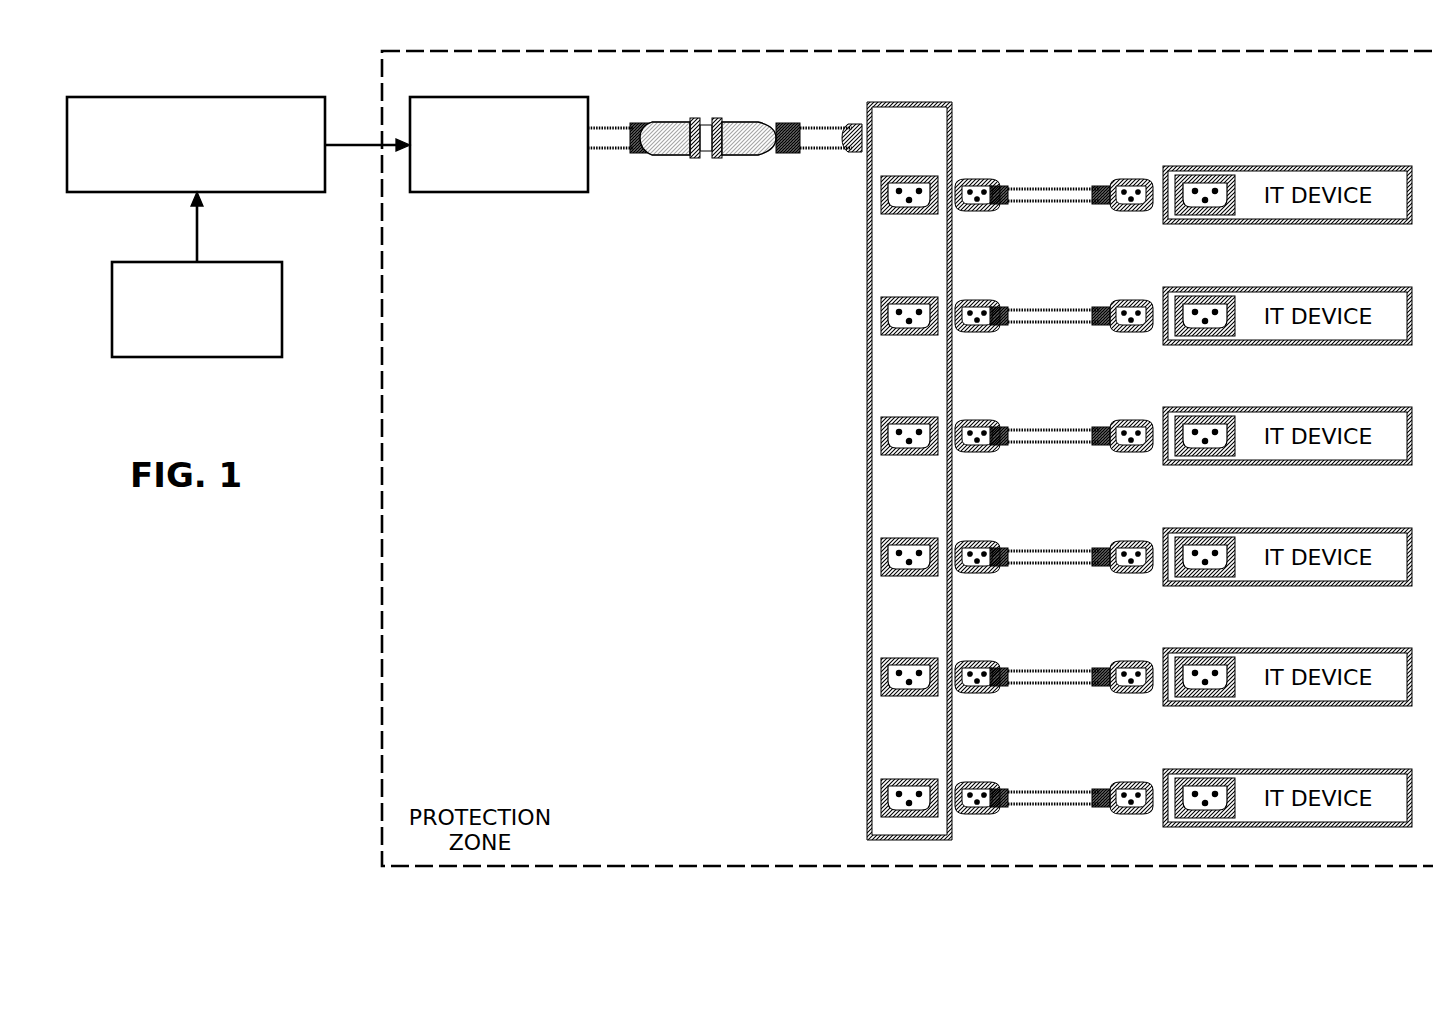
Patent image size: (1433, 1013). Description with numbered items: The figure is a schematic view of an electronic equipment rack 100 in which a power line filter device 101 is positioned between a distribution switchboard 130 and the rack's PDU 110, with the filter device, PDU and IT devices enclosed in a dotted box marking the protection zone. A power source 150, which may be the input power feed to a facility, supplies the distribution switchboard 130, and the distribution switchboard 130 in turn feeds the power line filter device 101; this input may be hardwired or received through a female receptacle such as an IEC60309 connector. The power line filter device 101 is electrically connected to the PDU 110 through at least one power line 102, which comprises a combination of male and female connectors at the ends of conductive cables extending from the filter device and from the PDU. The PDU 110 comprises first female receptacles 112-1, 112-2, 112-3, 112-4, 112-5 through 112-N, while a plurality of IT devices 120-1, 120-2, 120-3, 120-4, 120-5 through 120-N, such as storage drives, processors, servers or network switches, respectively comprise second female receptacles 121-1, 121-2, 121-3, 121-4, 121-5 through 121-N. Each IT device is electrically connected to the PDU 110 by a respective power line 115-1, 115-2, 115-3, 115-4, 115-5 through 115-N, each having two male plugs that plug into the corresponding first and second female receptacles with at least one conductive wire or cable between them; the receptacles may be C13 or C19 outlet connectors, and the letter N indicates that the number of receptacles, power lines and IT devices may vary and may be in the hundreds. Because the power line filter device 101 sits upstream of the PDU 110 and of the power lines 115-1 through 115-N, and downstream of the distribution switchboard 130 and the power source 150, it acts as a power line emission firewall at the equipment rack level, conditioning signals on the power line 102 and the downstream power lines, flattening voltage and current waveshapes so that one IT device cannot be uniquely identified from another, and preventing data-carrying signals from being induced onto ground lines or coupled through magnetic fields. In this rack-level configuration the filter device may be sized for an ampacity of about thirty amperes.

The electronic equipment rack 100 is at (1427, 82).
The power line filter device 101 is at (453, 192).
The power line 102 is at (810, 113).
The PDU 110 is at (952, 115).
The first female receptacle 112-1 is at (880, 197).
The first female receptacle 112-2 is at (880, 318).
The first female receptacle 112-3 is at (880, 438).
The first female receptacle 112-4 is at (880, 559).
The first female receptacle 112-5 is at (880, 679).
The first female receptacle 112-N is at (880, 800).
The power line 115-1 is at (1054, 169).
The power line 115-2 is at (1054, 290).
The power line 115-3 is at (1054, 410).
The power line 115-4 is at (1054, 531).
The power line 115-5 is at (1054, 651).
The power line 115-N is at (1054, 772).
The IT device 120-1 is at (1375, 167).
The IT device 120-2 is at (1375, 288).
The IT device 120-3 is at (1375, 408).
The IT device 120-4 is at (1375, 529).
The IT device 120-5 is at (1375, 649).
The IT device 120-N is at (1375, 770).
The second female receptacle 121-1 is at (1215, 175).
The second female receptacle 121-2 is at (1215, 296).
The second female receptacle 121-3 is at (1215, 416).
The second female receptacle 121-4 is at (1215, 537).
The second female receptacle 121-5 is at (1215, 657).
The second female receptacle 121-N is at (1215, 778).
The distribution switchboard 130 is at (163, 97).
The power source 150 is at (283, 302).